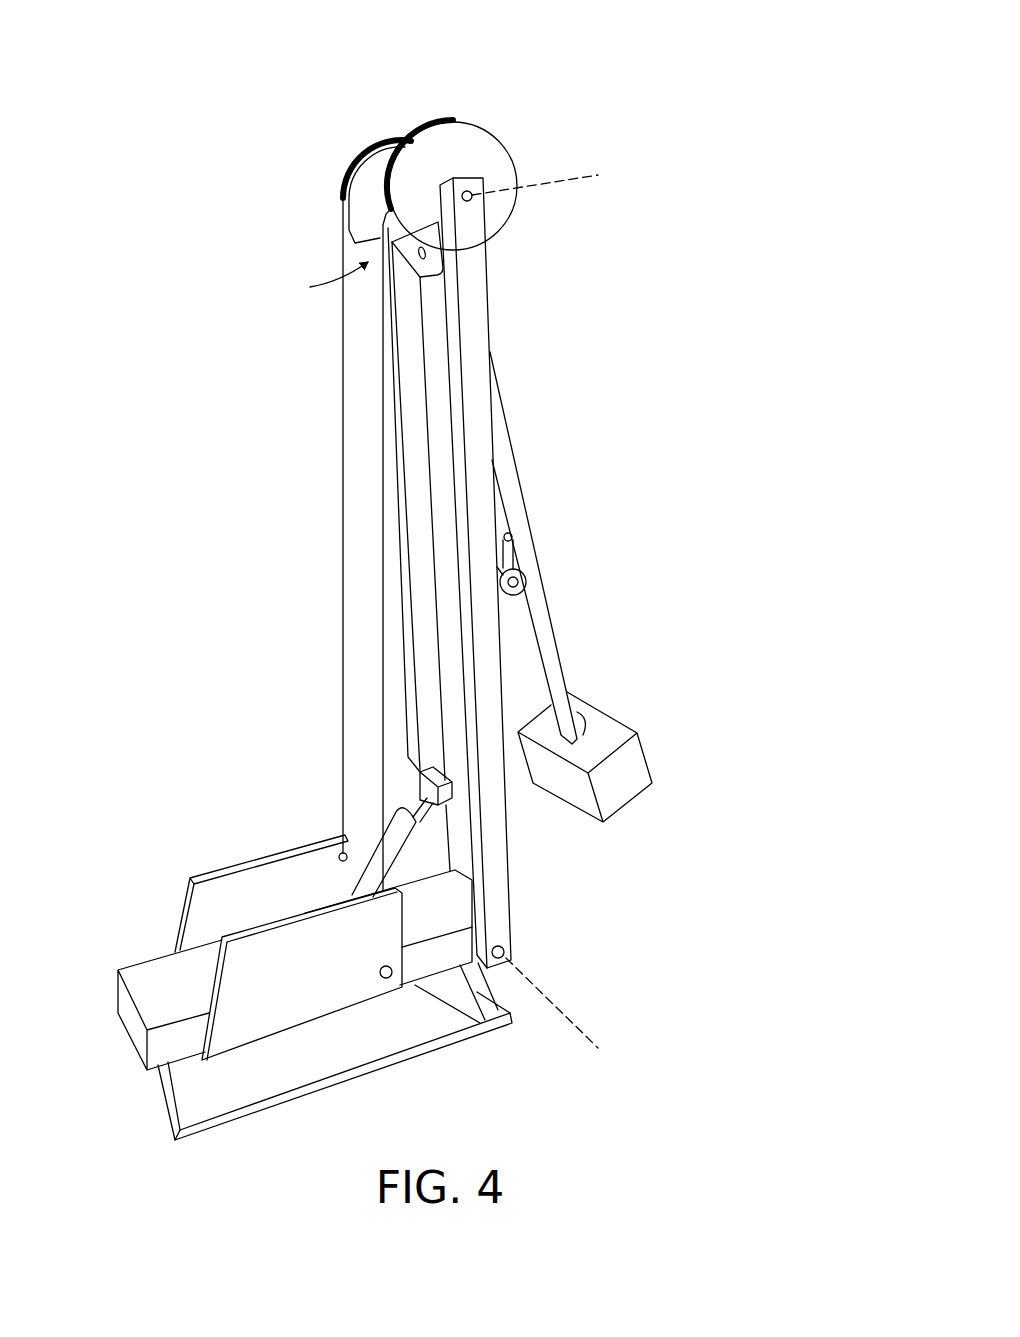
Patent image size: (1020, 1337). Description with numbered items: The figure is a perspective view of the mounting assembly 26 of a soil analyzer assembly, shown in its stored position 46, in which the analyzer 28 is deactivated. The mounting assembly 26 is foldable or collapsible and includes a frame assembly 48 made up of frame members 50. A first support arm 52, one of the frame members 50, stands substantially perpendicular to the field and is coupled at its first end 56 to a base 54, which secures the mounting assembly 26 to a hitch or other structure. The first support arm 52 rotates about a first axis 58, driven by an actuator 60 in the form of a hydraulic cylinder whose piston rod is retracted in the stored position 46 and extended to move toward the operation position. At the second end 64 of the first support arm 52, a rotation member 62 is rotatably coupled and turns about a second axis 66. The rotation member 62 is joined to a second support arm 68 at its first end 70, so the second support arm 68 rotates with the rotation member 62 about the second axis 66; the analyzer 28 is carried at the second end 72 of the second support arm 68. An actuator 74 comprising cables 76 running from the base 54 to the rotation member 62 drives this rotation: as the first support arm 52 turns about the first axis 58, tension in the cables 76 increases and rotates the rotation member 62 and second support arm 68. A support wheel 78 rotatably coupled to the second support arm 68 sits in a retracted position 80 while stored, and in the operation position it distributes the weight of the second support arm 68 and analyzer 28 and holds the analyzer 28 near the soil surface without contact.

The mounting assembly 26 is at (500, 88).
The analyzer 28 is at (655, 762).
The stored position 46 is at (520, 365).
The frame assembly 48 is at (258, 362).
The frame members 50 is at (250, 673).
The first support arm 52 is at (500, 862).
The base 54 is at (437, 968).
The first end 56 is at (512, 945).
The first axis 58 is at (595, 1030).
The actuator 60 is at (330, 890).
The rotation member 62 is at (443, 130).
The second end 64 is at (358, 188).
The second axis 66 is at (585, 195).
The second support arm 68 is at (565, 650).
The first end 70 is at (320, 281).
The second end 72 is at (588, 713).
The actuator 74 is at (308, 525).
The cables 76 is at (343, 735).
The support wheel 78 is at (527, 577).
The retracted position 80 is at (572, 582).